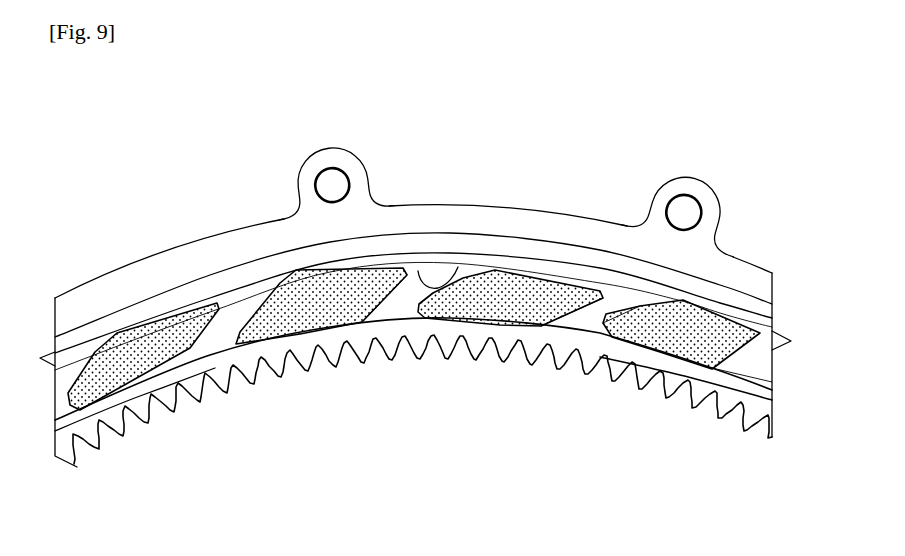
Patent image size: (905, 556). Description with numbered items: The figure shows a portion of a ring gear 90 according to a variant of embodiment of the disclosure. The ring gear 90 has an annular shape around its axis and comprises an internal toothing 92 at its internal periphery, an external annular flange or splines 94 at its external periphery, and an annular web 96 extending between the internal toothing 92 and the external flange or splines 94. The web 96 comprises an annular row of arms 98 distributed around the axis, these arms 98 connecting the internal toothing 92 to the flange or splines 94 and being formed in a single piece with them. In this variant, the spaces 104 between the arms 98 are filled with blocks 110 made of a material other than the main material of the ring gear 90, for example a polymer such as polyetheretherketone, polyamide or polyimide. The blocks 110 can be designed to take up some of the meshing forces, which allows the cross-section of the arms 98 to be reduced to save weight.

The ring gear 90 is at (757, 134).
The internal toothing 92 is at (706, 421).
The external annular flange or splines 94 is at (658, 193).
The annular web 96 is at (426, 286).
The arms 98 is at (610, 304).
The spaces 104 is at (533, 302).
The blocks 110 is at (473, 292).